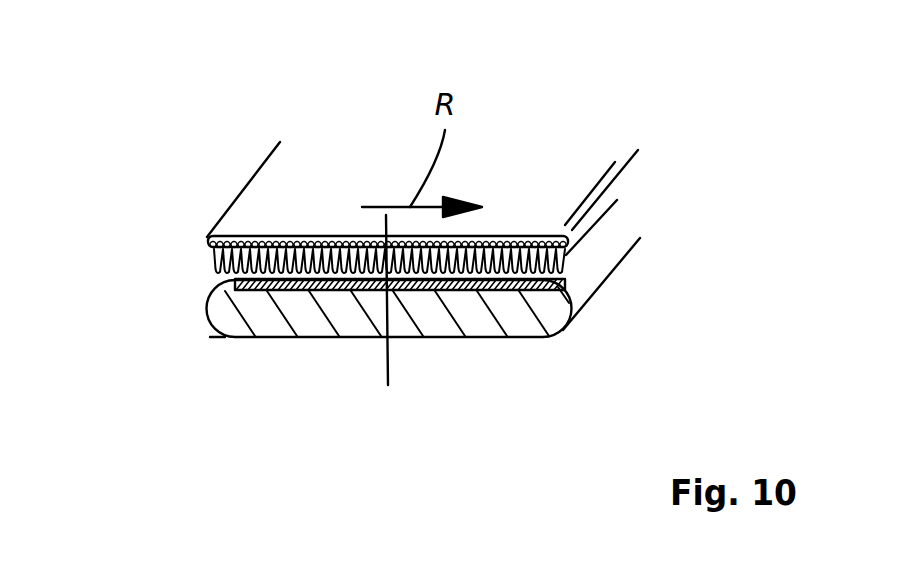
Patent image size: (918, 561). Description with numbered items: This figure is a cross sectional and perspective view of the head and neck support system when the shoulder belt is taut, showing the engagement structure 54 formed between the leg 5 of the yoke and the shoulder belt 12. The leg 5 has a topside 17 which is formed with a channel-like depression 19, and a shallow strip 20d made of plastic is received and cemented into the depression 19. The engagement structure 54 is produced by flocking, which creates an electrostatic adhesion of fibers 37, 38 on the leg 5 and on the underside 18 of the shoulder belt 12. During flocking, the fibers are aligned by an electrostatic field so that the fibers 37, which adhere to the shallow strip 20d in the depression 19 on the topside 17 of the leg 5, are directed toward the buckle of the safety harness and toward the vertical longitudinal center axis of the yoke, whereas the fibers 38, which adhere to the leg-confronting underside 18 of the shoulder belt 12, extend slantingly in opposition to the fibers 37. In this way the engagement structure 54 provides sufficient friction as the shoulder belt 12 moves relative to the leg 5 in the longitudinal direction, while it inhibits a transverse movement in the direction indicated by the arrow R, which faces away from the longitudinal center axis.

The leg 5 is at (218, 352).
The shoulder belt 12 is at (250, 156).
The topside 17 is at (548, 263).
The underside 18 is at (505, 265).
The channel-like depression 19 is at (437, 262).
The shallow strip 20d is at (296, 305).
The fibers 37 is at (338, 263).
The fibers 38 is at (332, 233).
The engagement structure 54 is at (200, 262).